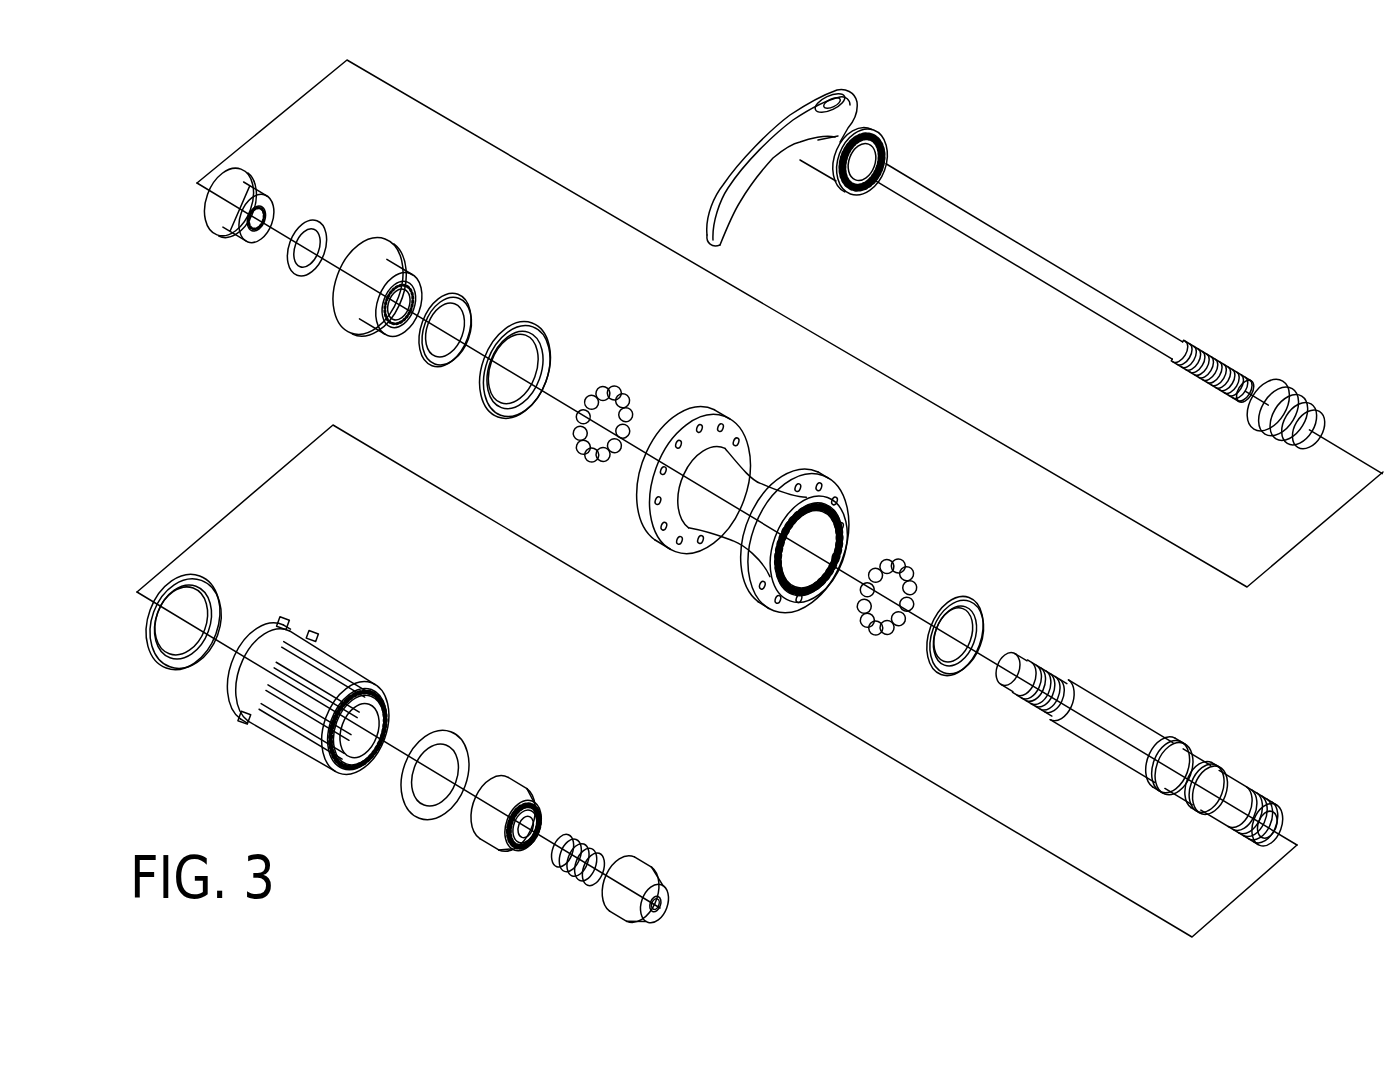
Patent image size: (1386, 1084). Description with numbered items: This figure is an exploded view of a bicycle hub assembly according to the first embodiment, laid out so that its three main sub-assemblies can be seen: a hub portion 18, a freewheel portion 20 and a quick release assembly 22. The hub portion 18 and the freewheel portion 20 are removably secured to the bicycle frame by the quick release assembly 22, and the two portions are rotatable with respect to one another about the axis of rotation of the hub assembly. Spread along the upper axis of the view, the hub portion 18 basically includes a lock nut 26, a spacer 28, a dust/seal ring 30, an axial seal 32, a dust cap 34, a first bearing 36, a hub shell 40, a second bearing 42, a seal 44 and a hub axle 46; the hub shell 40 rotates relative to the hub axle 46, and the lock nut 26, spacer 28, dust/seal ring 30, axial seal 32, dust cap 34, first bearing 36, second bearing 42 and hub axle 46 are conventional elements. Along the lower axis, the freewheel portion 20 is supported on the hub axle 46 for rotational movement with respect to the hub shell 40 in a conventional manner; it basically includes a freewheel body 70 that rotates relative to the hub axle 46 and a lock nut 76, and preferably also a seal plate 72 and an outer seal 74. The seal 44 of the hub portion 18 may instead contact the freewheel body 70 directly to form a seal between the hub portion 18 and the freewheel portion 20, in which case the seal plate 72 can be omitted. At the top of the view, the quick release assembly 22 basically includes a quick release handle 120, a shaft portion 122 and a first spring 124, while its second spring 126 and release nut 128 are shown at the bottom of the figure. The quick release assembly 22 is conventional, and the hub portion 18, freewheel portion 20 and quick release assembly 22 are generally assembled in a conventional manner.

The hub portion 18 is at (282, 127).
The freewheel portion 20 is at (228, 552).
The quick release assembly 22 is at (1008, 122).
The lock nut 26 is at (266, 198).
The spacer 28 is at (322, 222).
The dust/seal ring 30 is at (408, 260).
The axial seal 32 is at (467, 300).
The dust cap 34 is at (557, 342).
The first bearing 36 is at (630, 390).
The hub shell 40 is at (760, 481).
The second bearing 42 is at (908, 562).
The seal 44 is at (968, 597).
The hub axle 46 is at (1028, 662).
The freewheel body 70 is at (337, 658).
The seal plate 72 is at (213, 584).
The outer seal 74 is at (453, 737).
The lock nut 76 is at (509, 782).
The quick release handle 120 is at (887, 142).
The shaft portion 122 is at (1044, 257).
The first spring 124 is at (1290, 380).
The second spring 126 is at (580, 841).
The release nut 128 is at (652, 868).